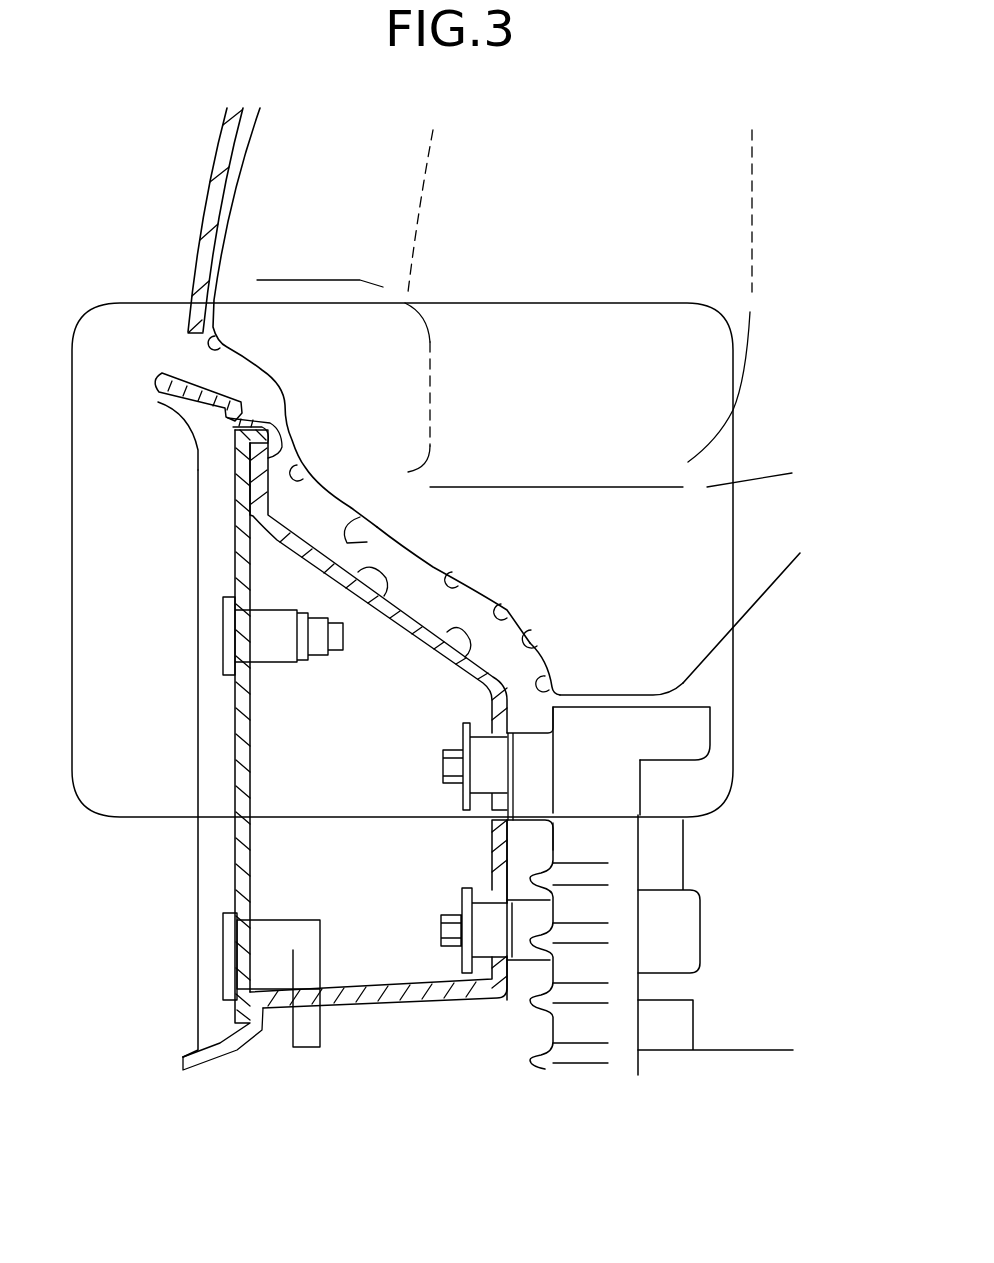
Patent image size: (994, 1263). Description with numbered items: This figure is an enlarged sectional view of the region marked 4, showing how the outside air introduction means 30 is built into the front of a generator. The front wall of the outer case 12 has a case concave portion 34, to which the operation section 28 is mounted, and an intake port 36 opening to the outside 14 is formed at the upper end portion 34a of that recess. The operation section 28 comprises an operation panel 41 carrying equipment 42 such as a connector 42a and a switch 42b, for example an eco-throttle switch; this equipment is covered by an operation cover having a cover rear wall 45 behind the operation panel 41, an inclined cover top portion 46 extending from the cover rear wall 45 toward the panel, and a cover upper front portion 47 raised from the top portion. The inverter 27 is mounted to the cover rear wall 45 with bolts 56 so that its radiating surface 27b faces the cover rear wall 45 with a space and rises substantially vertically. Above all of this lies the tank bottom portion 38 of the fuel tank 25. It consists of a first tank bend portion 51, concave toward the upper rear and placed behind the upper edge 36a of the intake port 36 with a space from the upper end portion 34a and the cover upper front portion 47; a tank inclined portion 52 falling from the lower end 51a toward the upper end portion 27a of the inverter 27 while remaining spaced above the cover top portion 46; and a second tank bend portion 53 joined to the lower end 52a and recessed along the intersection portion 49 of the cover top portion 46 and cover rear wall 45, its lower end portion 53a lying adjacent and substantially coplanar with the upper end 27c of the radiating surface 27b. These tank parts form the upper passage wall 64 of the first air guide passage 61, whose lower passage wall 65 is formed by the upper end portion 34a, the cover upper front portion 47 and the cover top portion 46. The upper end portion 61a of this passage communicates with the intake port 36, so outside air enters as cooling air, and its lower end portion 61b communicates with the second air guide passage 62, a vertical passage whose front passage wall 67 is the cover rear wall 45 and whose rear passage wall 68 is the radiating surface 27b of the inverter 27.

The door trim assembly region 4 is at (612, 303).
The outer case 12 is at (200, 138).
The outside 14 is at (82, 259).
The fuel tank 25 is at (545, 152).
The inverter 27 is at (653, 950).
The upper end portion of the inverter 27a is at (635, 710).
The radiating surface 27b is at (553, 781).
The upper end of the radiating surface 27c is at (560, 713).
The operation section 28 is at (220, 723).
The outside air introduction means 30 is at (366, 540).
The case concave portion 34 is at (193, 433).
The upper end portion of the case concave portion 34a is at (160, 403).
The intake port 36 is at (172, 375).
The upper edge of the intake port 36a is at (197, 334).
The tank bottom portion 38 is at (692, 562).
The operation panel 41 is at (237, 840).
The equipment 42 is at (207, 935).
The connector 42a is at (223, 967).
The switch 42b is at (230, 630).
The cover rear wall 45 is at (497, 833).
The cover top portion 46 is at (468, 642).
The cover upper front portion 47 is at (267, 517).
The intersection portion 49 is at (510, 713).
The first tank bend portion 51 is at (297, 397).
The lower end of the first tank bend portion 51a is at (302, 477).
The tank inclined portion 52 is at (455, 582).
The lower end of the tank inclined portion 52a is at (500, 620).
The second tank bend portion 53 is at (530, 653).
The lower end portion of the second tank bend portion 53a is at (555, 688).
The bolts 56 is at (443, 767).
The first air guide passage 61 is at (408, 693).
The upper end portion of the first air guide passage 61a is at (222, 345).
The lower end portion of the first air guide passage 61b is at (609, 685).
The second air guide passage 62 is at (752, 828).
The upper passage wall 64 is at (427, 565).
The lower passage wall 65 is at (389, 582).
The front passage wall 67 is at (545, 890).
The rear passage wall 68 is at (540, 857).